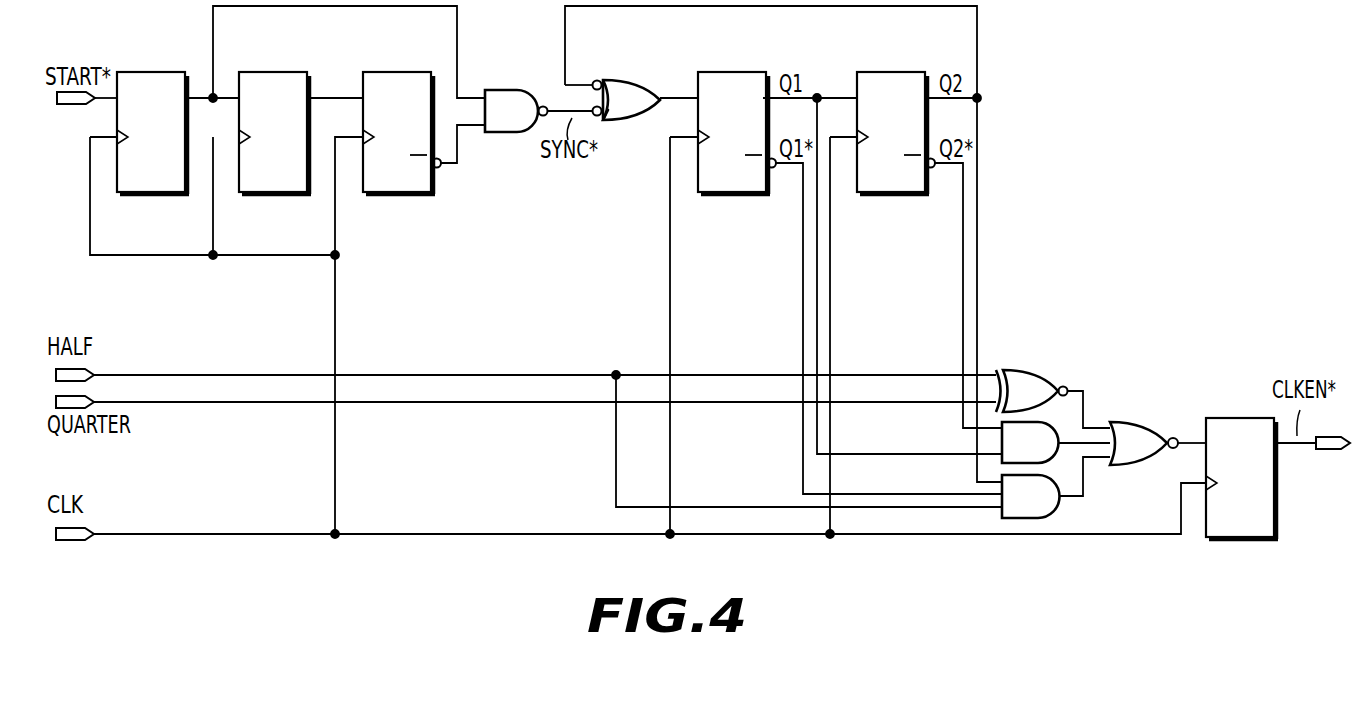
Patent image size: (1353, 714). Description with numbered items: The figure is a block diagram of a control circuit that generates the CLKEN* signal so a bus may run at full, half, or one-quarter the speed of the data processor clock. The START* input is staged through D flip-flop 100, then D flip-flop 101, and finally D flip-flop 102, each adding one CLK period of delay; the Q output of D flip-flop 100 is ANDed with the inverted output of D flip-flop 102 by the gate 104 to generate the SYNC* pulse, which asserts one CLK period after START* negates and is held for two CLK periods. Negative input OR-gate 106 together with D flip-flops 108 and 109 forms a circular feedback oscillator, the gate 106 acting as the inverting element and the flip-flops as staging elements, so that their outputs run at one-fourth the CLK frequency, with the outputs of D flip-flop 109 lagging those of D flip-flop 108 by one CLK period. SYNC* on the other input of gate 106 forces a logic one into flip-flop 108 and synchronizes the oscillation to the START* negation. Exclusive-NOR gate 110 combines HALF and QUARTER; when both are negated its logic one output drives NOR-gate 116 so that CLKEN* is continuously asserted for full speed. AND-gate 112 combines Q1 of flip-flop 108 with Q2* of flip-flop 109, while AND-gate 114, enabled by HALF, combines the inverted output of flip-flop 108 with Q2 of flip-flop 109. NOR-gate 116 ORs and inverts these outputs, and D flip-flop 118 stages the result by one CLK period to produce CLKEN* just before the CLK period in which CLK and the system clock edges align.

The D flip-flop 100 is at (165, 196).
The D flip-flop 101 is at (286, 71).
The D flip-flop 102 is at (408, 71).
The NAND gate 104 is at (522, 121).
The negative input OR-gate 106 is at (643, 110).
The D flip-flop 108 is at (732, 71).
The D flip-flop 109 is at (890, 71).
The Exclusive-NOR gate 110 is at (1044, 398).
The AND-gate 112 is at (1043, 453).
The AND-gate 114 is at (1043, 507).
The NOR-gate 116 is at (1150, 453).
The D flip-flop 118 is at (1229, 417).